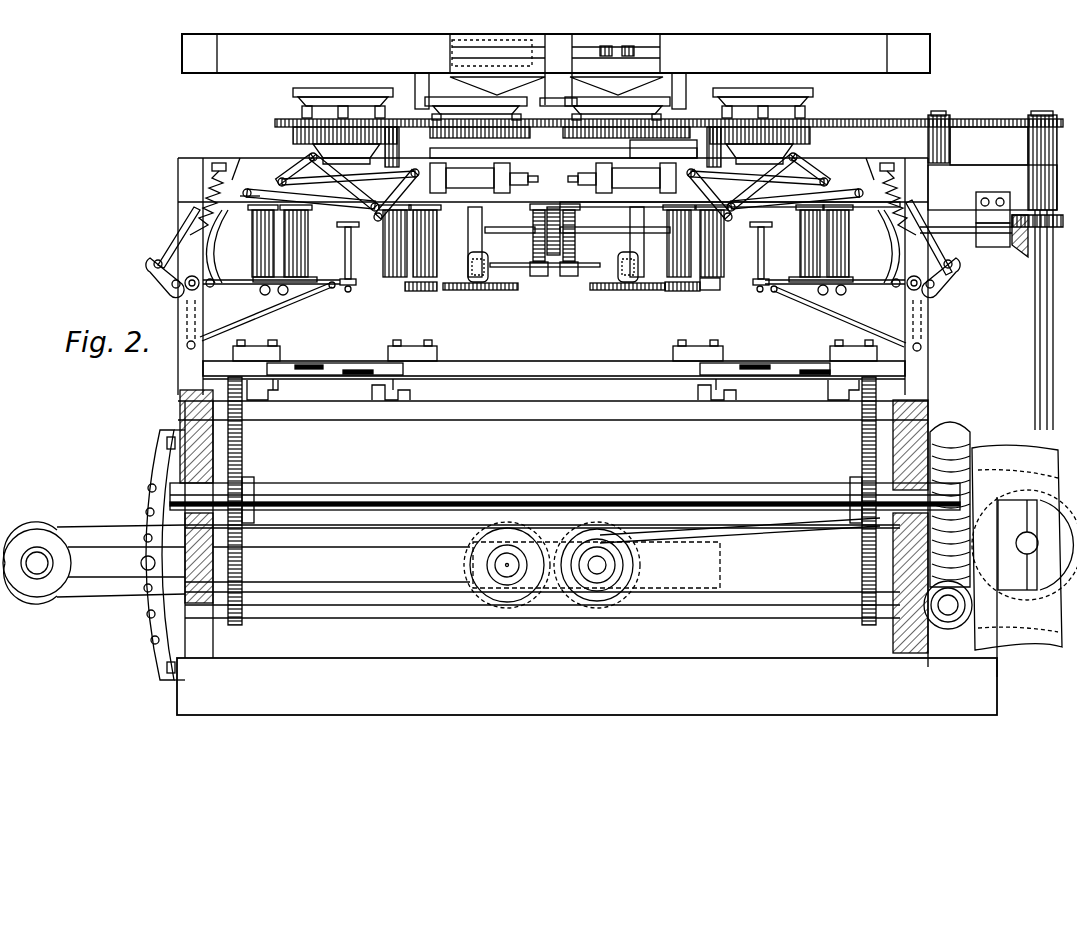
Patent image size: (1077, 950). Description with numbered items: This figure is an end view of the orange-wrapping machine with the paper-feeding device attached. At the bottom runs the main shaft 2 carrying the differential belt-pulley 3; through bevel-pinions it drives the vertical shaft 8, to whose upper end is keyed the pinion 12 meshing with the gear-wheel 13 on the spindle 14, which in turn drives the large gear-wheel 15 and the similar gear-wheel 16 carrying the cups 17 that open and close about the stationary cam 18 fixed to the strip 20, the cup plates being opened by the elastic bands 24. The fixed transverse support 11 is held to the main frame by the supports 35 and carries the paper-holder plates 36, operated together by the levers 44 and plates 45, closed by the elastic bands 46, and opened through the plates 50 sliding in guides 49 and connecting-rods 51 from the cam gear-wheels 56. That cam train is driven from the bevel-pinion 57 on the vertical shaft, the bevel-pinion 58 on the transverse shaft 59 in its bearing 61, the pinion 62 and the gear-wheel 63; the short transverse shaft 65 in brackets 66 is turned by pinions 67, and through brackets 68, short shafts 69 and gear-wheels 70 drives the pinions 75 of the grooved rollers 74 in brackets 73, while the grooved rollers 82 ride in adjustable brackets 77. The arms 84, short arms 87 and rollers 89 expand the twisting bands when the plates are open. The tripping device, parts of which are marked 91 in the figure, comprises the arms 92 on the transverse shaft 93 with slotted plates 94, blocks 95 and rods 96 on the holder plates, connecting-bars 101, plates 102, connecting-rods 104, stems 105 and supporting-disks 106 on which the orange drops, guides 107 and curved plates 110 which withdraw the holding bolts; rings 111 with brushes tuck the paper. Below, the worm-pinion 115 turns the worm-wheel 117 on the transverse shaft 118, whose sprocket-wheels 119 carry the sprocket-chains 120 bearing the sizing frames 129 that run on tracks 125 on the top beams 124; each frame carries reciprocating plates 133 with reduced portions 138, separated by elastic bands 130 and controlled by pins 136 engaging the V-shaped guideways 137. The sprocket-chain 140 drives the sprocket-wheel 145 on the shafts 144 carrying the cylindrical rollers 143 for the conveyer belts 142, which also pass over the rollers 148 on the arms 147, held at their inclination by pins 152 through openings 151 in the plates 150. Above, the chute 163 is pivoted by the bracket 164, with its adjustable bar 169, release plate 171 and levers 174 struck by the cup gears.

The main shaft 2 is at (1024, 553).
The differential belt-pulley 3 is at (1010, 450).
The vertical shaft 8 is at (1040, 375).
The transverse support 11 is at (262, 170).
The pinion 12 is at (1040, 112).
The gear-wheel 13 is at (950, 125).
The spindle 14 is at (953, 144).
The large gear-wheel 15 is at (820, 120).
The gear-wheel 16 is at (300, 120).
The cups 17 is at (345, 92).
The cam 18 is at (396, 140).
The strip 20 is at (563, 149).
The elastic bands 24 is at (320, 90).
The supports 35 is at (940, 329).
The movable plates 36 is at (556, 161).
The levers 44 is at (290, 167).
The plates 45 is at (310, 157).
The elastic bands 46 is at (270, 168).
The guides 49 is at (556, 182).
The plates 50 is at (470, 178).
The connecting-rods 51 is at (386, 172).
The gear-wheels 56 is at (533, 246).
The bevel-pinion 57 is at (1058, 228).
The bevel-pinion 58 is at (1012, 247).
The transverse shaft 59 is at (966, 234).
The bearing 61 is at (552, 207).
The pinion 62 is at (570, 199).
The gear-wheel 63 is at (552, 270).
The short transverse shaft 65 is at (538, 276).
The brackets 66 is at (500, 230).
The pinions 67 is at (560, 274).
The brackets 68 is at (470, 233).
The short shafts 69 is at (997, 188).
The gear-wheels 70 is at (490, 291).
The brackets 73 is at (437, 253).
The grooved rollers 74 is at (468, 272).
The pinions 75 is at (428, 291).
The brackets 77 is at (290, 263).
The grooved rollers 82 is at (255, 240).
The arms 84 is at (730, 211).
The short arms 87 is at (708, 290).
The rollers 89 is at (300, 254).
The pin 91 is at (330, 288).
The arms 92 is at (553, 297).
The transverse shaft 93 is at (564, 294).
The slotted plates 94 is at (553, 282).
The blocks 95 is at (557, 199).
The rods 96 is at (185, 238).
The connecting-bars 101 is at (553, 296).
The plates 102 is at (561, 296).
The connecting-rods 104 is at (270, 310).
The stems 105 is at (352, 258).
The supporting-disks 106 is at (772, 240).
The guides 107 is at (237, 195).
The curved plates 110 is at (225, 247).
The rings 111 is at (317, 150).
The worm-pinion 115 is at (965, 625).
The worm-wheel 117 is at (960, 417).
The transverse shaft 118 is at (770, 483).
The sprocket-wheels 119 is at (258, 480).
The sprocket-chains 120 is at (242, 437).
The top beams 124 is at (180, 410).
The tracks 125 is at (180, 392).
The frames 129 is at (553, 382).
The elastic bands 130 is at (418, 342).
The reciprocating plates 133 is at (292, 365).
The pins 136 is at (282, 388).
The V-shaped guideways 137 is at (372, 402).
The reduced portions 138 is at (338, 365).
The sprocket-chain 140 is at (752, 530).
The belts 142 is at (556, 560).
The cylindrical rollers 143 is at (570, 535).
The shafts 144 is at (600, 565).
The sprocket-wheel 145 is at (596, 600).
The arms 147 is at (743, 573).
The cylindrical rollers 148 is at (70, 523).
The plates 150 is at (150, 460).
The openings 151 is at (147, 488).
The pins 152 is at (141, 562).
The chute 163 is at (700, 35).
The bracket 164 is at (560, 34).
The bar 169 is at (510, 40).
The plate 171 is at (608, 58).
The levers 174 is at (418, 82).